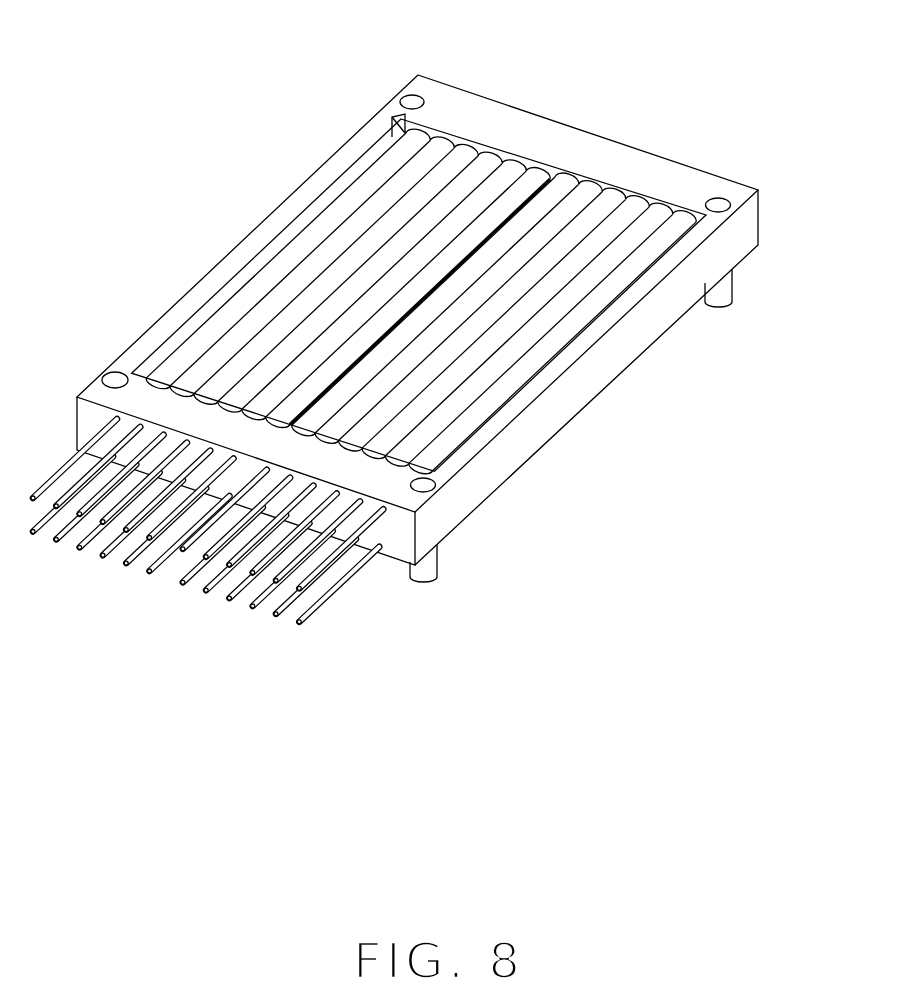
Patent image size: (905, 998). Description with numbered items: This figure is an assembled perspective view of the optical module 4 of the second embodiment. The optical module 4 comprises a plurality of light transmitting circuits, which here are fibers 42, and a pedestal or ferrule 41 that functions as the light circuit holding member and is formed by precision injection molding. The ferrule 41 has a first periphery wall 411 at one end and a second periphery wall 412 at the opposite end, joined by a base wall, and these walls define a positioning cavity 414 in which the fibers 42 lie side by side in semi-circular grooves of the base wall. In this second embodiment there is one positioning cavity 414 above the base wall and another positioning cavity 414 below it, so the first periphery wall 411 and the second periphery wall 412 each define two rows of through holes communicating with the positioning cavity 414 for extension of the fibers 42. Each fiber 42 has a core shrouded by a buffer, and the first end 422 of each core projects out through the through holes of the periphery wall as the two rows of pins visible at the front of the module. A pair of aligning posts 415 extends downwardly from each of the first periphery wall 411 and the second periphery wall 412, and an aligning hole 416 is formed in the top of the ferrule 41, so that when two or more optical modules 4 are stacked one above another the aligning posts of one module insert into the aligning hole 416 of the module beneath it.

The optical module 4 is at (590, 92).
The ferrule 41 is at (557, 414).
The first periphery wall 411 is at (392, 483).
The second periphery wall 412 is at (633, 168).
The positioning cavity 414 is at (393, 135).
The aligning posts 415 is at (723, 292).
The aligning hole 416 is at (717, 198).
The fibers 42 is at (303, 237).
The first end 422 is at (333, 583).